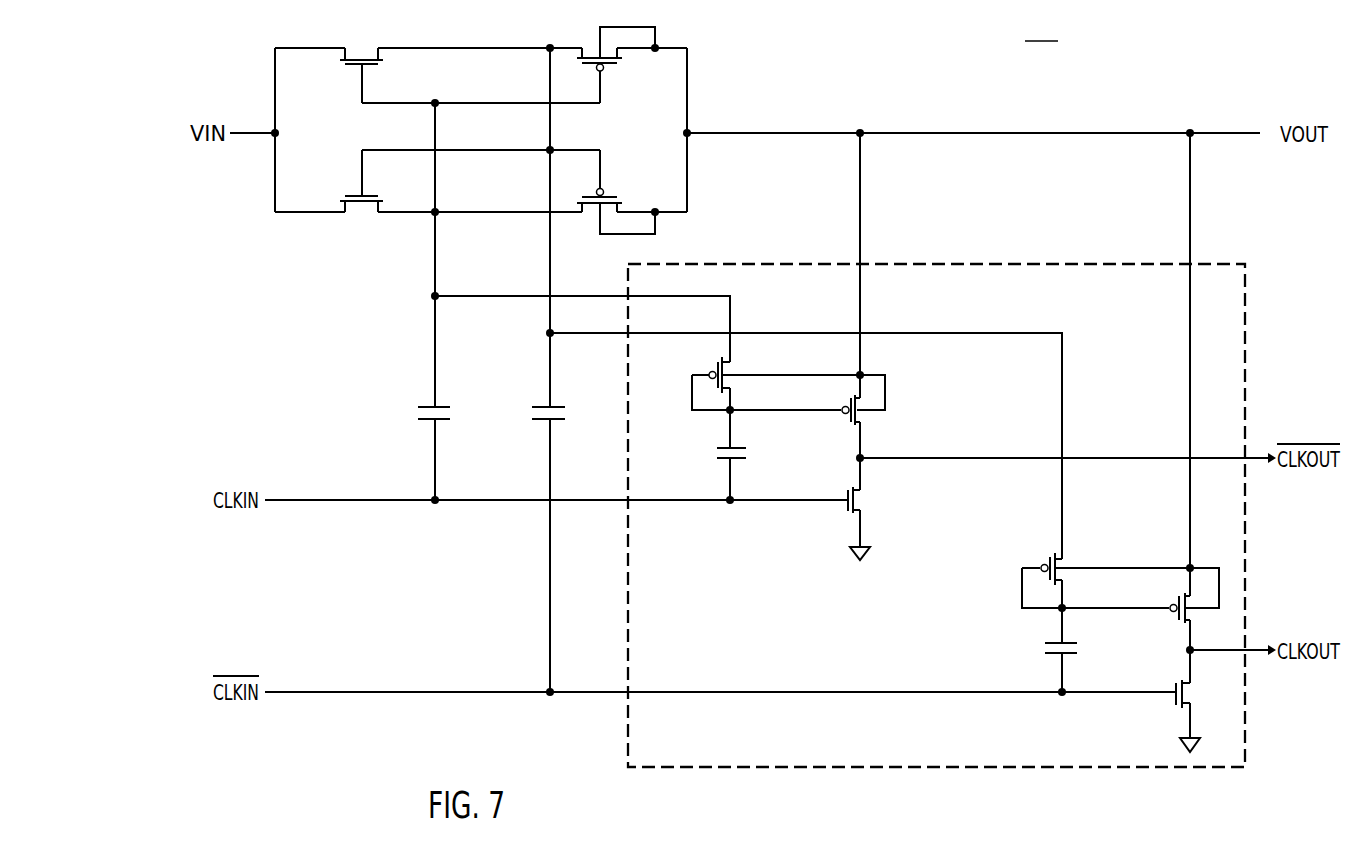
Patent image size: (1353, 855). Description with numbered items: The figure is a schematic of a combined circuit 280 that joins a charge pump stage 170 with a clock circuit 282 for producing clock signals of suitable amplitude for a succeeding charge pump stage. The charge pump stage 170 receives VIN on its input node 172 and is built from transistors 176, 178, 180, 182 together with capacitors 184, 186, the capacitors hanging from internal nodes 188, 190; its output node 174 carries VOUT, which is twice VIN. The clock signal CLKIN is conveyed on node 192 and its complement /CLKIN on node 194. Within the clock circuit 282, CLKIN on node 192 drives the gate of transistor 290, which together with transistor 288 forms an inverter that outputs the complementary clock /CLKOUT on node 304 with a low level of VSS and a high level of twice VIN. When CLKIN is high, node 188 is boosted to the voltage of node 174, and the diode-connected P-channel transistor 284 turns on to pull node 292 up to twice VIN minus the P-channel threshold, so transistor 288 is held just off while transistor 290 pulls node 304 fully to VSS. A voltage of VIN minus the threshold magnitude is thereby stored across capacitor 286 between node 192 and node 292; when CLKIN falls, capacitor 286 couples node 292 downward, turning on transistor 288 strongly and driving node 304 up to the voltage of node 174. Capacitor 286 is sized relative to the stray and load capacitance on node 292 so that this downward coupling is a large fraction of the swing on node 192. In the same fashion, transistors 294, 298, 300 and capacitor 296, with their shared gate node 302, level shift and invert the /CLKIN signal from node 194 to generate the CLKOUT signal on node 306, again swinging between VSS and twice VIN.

The charge pump stage 170 is at (318, 322).
The input node VIN 172 is at (236, 131).
The node 174 is at (766, 131).
The transistor 176 is at (380, 62).
The transistor 178 is at (618, 61).
The transistor 180 is at (347, 201).
The transistor 182 is at (618, 199).
The capacitor 184 is at (416, 413).
The capacitor 186 is at (530, 413).
The node 188 is at (432, 233).
The node 190 is at (551, 233).
The node 192 is at (334, 503).
The inverted clock input line 194 is at (360, 690).
The combined circuit 280 is at (1041, 30).
The clock circuit 282 is at (1000, 263).
The diode-connected P-channel transistor 284 is at (733, 370).
The capacitor 286 is at (713, 454).
The transistor 288 is at (848, 426).
The transistor 290 is at (847, 513).
The node 292 is at (691, 389).
The transistor 294 is at (1066, 561).
The capacitor 296 is at (1042, 647).
The transistor 298 is at (1176, 622).
The transistor 300 is at (1178, 706).
The node 302 is at (1020, 582).
The node 304 is at (978, 455).
The node 306 is at (1250, 649).